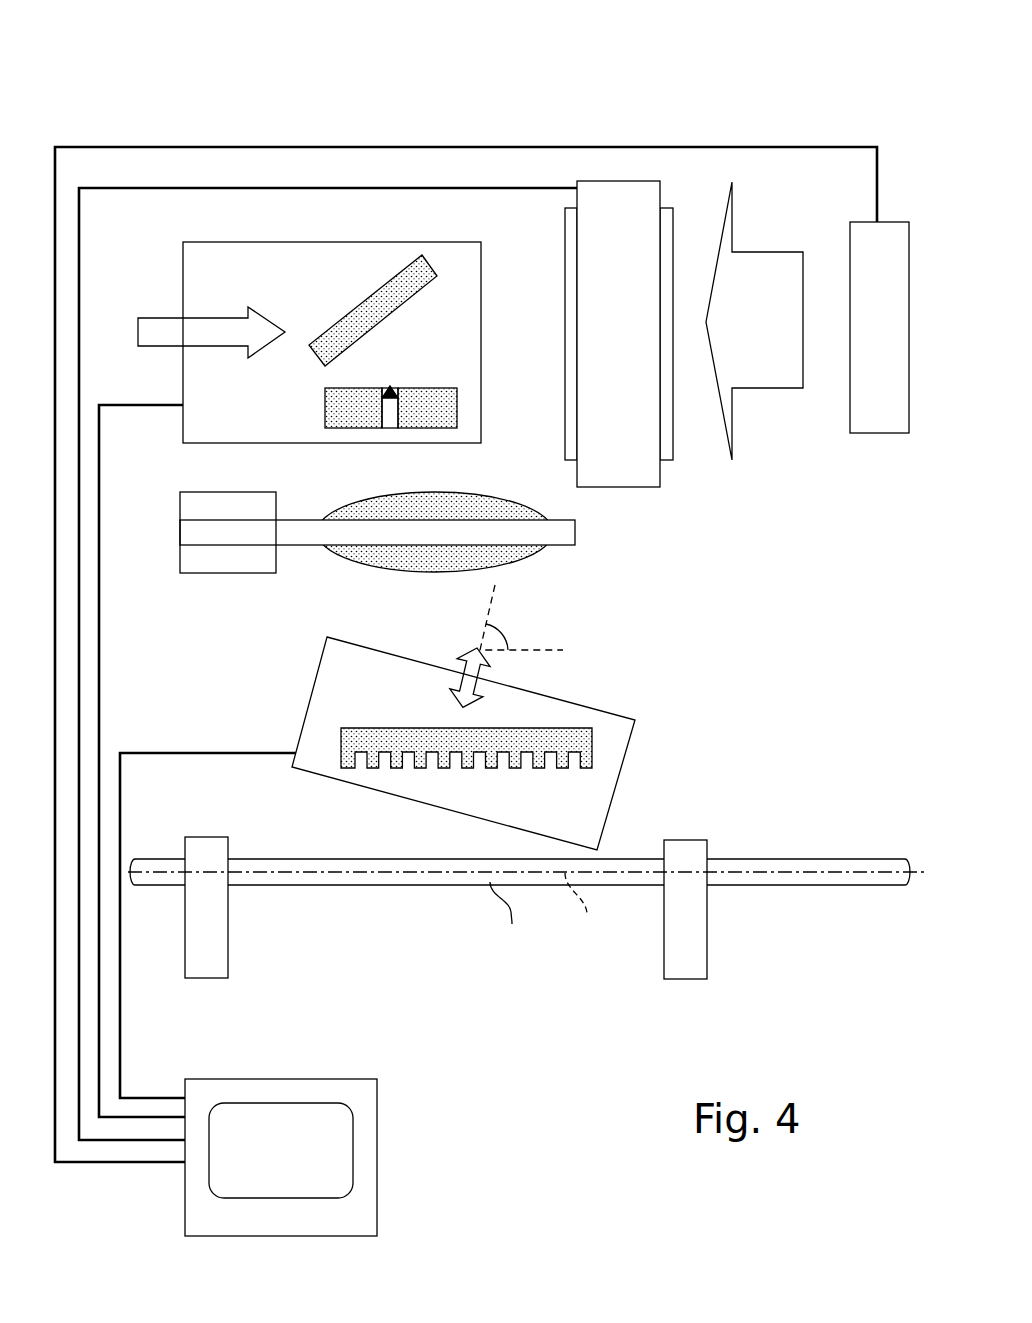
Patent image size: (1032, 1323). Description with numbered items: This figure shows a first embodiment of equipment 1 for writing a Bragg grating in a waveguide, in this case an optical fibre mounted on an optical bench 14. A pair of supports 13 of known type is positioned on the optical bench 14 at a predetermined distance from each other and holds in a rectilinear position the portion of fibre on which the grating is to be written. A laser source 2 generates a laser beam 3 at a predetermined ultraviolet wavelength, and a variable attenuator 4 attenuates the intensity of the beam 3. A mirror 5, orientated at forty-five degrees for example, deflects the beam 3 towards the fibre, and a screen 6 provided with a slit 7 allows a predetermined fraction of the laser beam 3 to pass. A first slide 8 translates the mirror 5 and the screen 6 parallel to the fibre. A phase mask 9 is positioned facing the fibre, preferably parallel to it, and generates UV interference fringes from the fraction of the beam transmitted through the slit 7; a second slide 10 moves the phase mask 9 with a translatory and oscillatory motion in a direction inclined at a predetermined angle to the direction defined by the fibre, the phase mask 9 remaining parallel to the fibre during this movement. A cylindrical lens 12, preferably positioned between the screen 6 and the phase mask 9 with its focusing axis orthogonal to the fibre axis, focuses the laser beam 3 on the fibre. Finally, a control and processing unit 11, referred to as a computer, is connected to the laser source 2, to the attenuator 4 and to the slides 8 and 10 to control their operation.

The equipment for writing a Bragg grating 1 is at (330, 86).
The laser source 2 is at (870, 410).
The laser beam 3 is at (760, 375).
The variable attenuator 4 is at (643, 460).
The mirror 5 is at (397, 285).
The screen 6 is at (448, 398).
The slit 7 is at (383, 390).
The first slide 8 is at (205, 270).
The phase mask 9 is at (340, 765).
The second slide 10 is at (403, 676).
The control and processing unit 11 is at (330, 1153).
The cylindrical lens 12 is at (513, 558).
The supports 13 is at (222, 890).
The optical bench 14 is at (876, 983).